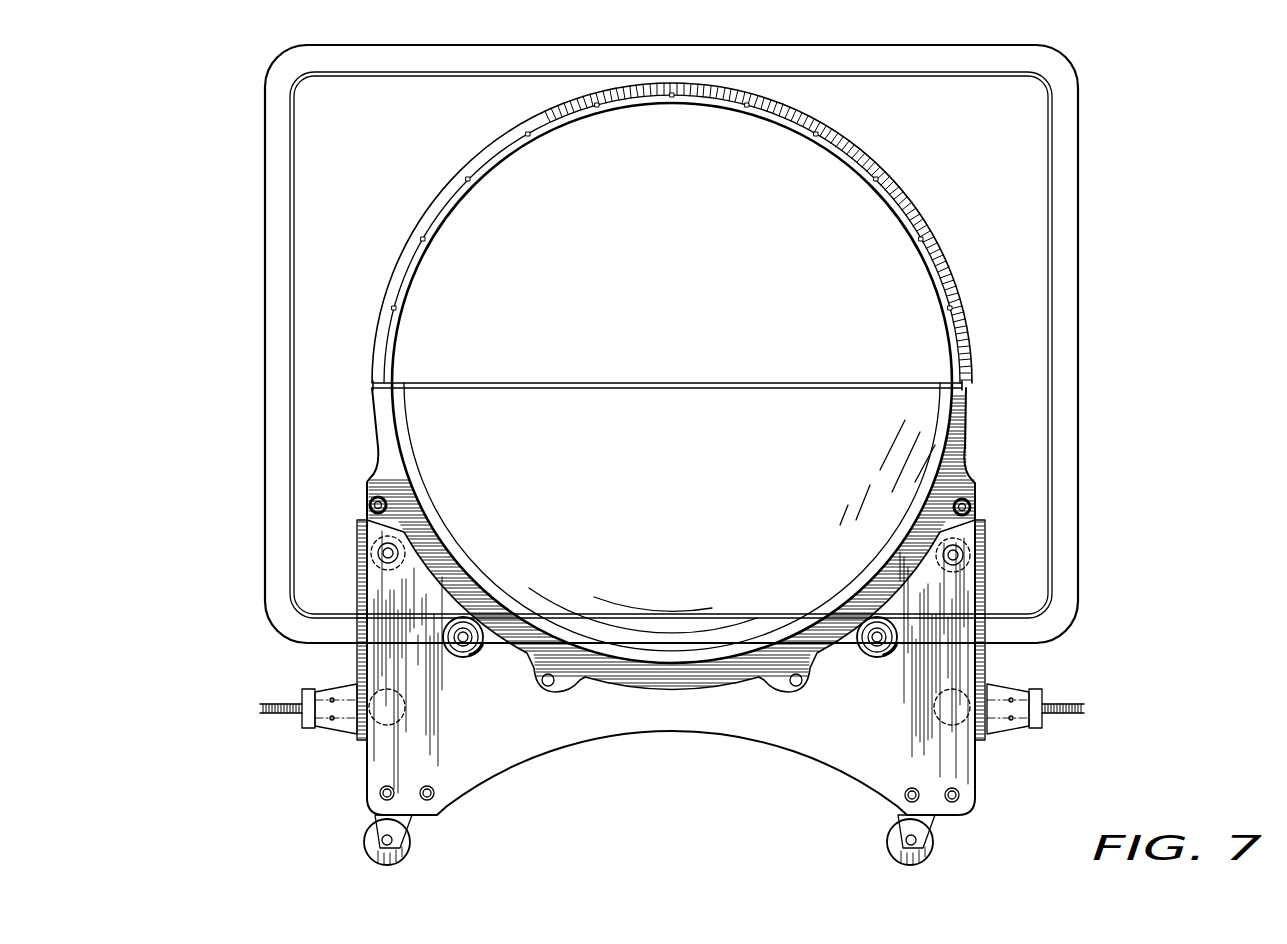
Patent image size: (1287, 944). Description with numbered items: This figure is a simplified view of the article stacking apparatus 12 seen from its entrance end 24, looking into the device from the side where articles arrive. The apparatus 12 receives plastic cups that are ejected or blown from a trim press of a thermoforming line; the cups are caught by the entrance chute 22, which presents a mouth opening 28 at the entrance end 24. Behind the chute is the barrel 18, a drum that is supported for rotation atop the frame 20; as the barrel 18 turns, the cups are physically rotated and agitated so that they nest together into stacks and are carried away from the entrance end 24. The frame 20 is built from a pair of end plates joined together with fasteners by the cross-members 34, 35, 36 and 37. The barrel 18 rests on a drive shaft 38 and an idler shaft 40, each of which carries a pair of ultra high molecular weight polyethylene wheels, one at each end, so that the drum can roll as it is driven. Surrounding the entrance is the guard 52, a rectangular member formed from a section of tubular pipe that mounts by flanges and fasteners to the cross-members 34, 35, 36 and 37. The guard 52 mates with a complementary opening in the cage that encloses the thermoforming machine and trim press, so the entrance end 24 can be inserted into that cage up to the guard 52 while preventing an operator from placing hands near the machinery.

The article stacking apparatus 12 is at (218, 121).
The guard 52 is at (1086, 112).
The barrel 18 is at (888, 153).
The entrance end 24 is at (475, 242).
The entrance chute 22 is at (690, 500).
The mouth opening 28 is at (745, 362).
The frame 20 is at (354, 766).
The cross-member 36 is at (372, 578).
The cross-member 34 is at (978, 578).
The idler shaft 40 is at (442, 628).
The drive shaft 38 is at (880, 662).
The cross-member 37 is at (410, 717).
The cross-member 35 is at (990, 740).